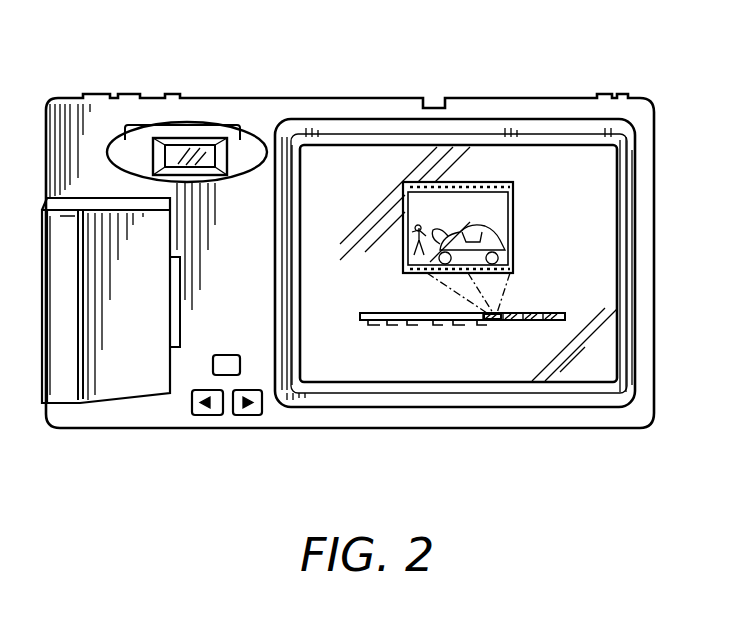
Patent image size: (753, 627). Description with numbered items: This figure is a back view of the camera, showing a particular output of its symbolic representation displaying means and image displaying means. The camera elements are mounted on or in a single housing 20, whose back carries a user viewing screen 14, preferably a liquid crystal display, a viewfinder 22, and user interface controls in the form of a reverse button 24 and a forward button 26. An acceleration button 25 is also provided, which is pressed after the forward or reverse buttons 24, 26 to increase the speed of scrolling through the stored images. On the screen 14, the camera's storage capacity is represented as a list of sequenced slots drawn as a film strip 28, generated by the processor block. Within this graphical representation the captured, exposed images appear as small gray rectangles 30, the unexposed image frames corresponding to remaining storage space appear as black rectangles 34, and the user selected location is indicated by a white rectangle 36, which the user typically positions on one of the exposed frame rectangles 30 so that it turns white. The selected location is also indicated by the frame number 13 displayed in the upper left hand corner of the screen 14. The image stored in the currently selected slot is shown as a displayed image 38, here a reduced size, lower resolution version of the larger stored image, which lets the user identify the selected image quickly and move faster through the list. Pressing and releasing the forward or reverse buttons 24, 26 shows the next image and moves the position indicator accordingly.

The frame number 13 is at (455, 263).
The user viewing screen 14 is at (588, 352).
The housing 20 is at (477, 98).
The viewfinder 22 is at (174, 147).
The reverse button 24 is at (203, 415).
The acceleration button 25 is at (212, 368).
The forward button 26 is at (247, 415).
The film strip 28 is at (468, 326).
The small gray rectangles 30 is at (423, 325).
The black rectangles 34 is at (553, 313).
The white rectangle 36 is at (493, 322).
The displayed image 38 is at (498, 203).